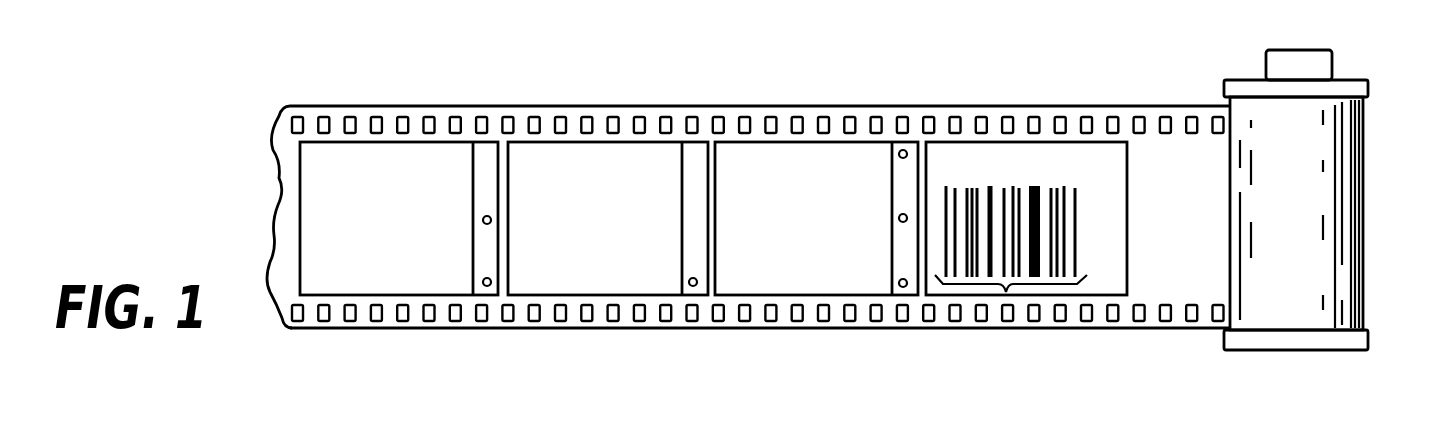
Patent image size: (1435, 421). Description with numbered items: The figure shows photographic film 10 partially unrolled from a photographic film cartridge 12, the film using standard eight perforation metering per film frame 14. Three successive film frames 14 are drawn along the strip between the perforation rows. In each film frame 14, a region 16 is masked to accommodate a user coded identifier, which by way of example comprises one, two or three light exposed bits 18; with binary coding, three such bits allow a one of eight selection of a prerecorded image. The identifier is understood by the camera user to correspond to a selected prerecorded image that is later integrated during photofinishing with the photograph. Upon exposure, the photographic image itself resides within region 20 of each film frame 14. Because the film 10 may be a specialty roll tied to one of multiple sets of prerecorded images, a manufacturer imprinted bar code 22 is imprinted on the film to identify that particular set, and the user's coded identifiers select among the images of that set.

The photographic film 10 is at (602, 105).
The photographic film cartridge 12 is at (1362, 142).
The film frame 14 is at (388, 296).
The region 16 is at (482, 152).
The light exposed bits 18 is at (483, 220).
The region 20 is at (391, 196).
The bar code 22 is at (1006, 292).